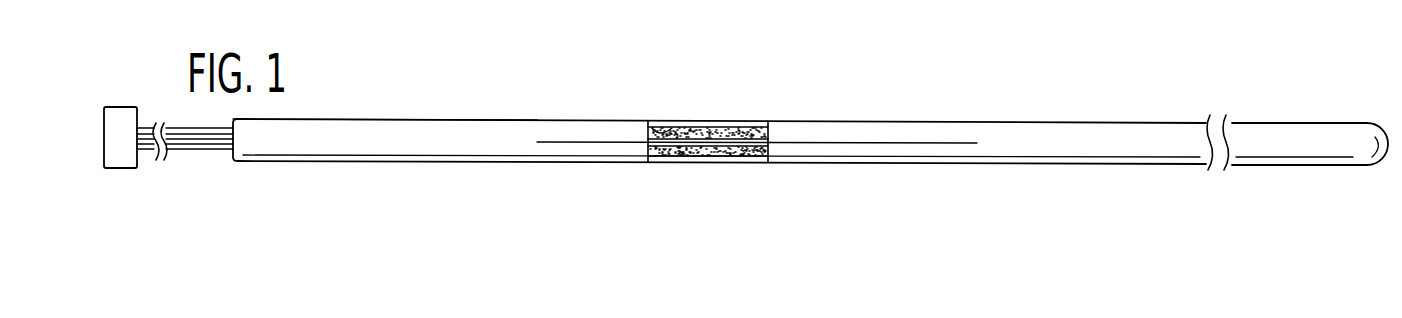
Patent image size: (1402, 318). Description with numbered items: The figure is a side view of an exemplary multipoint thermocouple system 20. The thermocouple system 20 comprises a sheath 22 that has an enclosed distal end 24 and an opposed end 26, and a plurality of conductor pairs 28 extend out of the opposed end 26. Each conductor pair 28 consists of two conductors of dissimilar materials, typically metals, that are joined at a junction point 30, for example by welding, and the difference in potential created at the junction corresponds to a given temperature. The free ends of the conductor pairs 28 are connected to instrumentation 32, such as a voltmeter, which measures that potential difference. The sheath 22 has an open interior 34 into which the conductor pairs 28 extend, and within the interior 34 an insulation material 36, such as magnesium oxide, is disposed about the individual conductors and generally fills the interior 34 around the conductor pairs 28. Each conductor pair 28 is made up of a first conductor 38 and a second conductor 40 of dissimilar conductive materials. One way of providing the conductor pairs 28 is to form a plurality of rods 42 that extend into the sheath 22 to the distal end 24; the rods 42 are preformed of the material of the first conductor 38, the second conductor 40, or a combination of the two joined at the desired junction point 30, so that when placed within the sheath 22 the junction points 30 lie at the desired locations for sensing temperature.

The thermocouple system 20 is at (887, 77).
The sheath 22 is at (958, 130).
The distal end 24 is at (1297, 123).
The opposed end 26 is at (452, 120).
The conductor pairs 28 is at (201, 168).
The junction point 30 is at (707, 140).
The instrumentation 32 is at (121, 115).
The open interior 34 is at (657, 128).
The insulation material 36 is at (672, 160).
The first conductor 38 is at (685, 146).
The second conductor 40 is at (728, 146).
The rods 42 is at (752, 146).